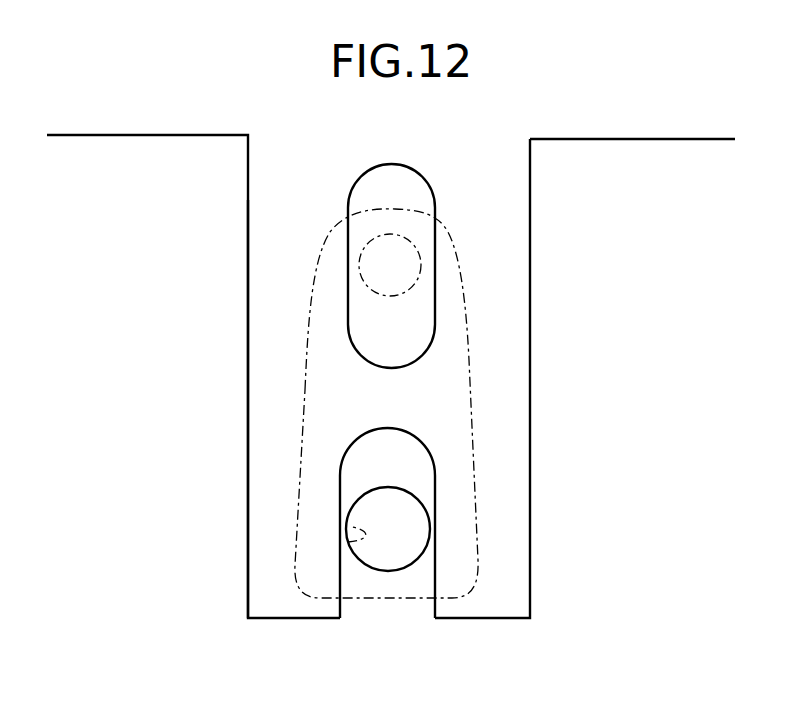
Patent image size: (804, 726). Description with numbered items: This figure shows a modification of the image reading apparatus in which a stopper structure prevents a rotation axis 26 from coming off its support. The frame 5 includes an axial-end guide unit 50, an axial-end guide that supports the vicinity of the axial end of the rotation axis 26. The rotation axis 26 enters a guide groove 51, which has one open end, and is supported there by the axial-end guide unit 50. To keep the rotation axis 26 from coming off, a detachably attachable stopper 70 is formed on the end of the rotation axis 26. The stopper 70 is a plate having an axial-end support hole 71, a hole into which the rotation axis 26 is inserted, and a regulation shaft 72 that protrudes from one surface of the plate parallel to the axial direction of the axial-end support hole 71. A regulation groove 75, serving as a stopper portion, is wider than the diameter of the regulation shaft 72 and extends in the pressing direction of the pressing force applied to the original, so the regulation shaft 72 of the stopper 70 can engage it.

The frame 5 is at (128, 136).
The axial-end guide unit 50 is at (248, 333).
The guide groove 51 is at (340, 618).
The regulation groove 75 is at (430, 194).
The regulation shaft 72 is at (421, 258).
The stopper 70 is at (472, 395).
The rotation axis 26 is at (365, 493).
The axial-end support hole 71 is at (348, 542).